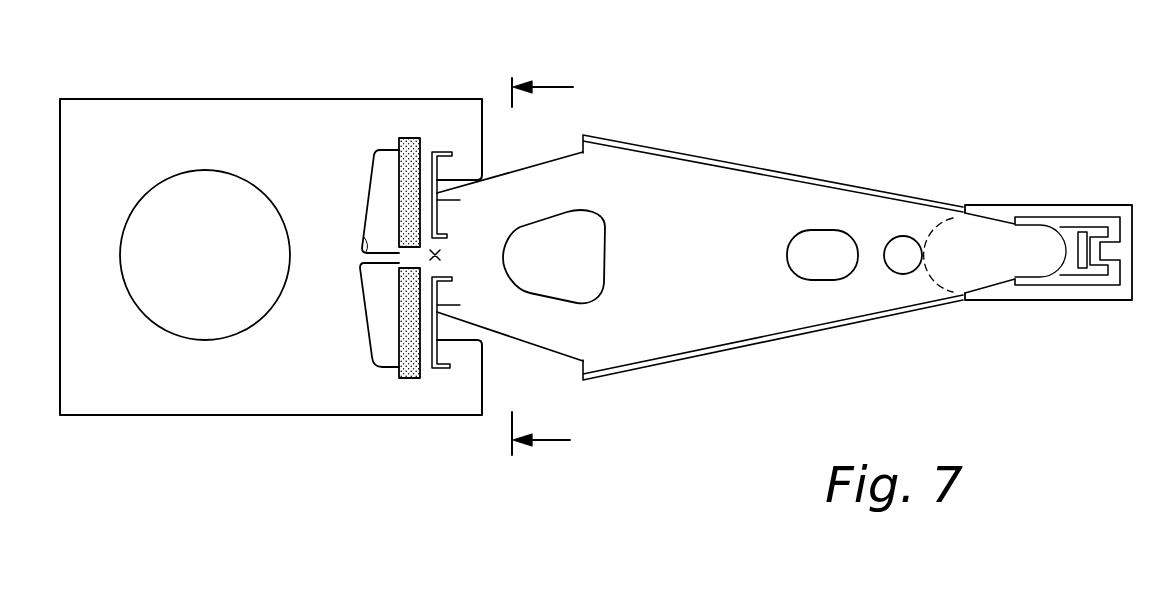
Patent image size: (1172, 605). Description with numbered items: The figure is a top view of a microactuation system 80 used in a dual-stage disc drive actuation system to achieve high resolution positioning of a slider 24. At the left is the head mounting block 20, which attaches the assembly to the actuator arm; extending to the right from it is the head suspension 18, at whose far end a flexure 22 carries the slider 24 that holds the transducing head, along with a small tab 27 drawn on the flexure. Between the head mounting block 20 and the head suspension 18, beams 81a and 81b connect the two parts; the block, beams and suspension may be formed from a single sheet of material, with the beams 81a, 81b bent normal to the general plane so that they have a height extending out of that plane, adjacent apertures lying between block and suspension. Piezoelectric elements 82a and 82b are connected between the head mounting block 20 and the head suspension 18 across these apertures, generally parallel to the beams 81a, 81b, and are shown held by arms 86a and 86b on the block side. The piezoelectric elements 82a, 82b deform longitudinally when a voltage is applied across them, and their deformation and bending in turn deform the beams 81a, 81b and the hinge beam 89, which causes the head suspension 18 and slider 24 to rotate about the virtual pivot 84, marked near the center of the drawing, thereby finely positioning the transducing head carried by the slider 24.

The microactuation system 80 is at (55, 83).
The head mounting block 20 is at (283, 98).
The head suspension 18 is at (782, 175).
The flexure 22 is at (1032, 207).
The slider 24 is at (1092, 222).
The flexure tab 27 is at (1097, 257).
The beam 81a is at (460, 200).
The beam 81b is at (445, 312).
The piezoelectric element 82a is at (413, 137).
The piezoelectric element 82b is at (408, 380).
The virtual pivot 84 is at (440, 256).
The first arm 86a is at (385, 160).
The second arm 86b is at (378, 335).
The hinge beam 89 is at (377, 240).